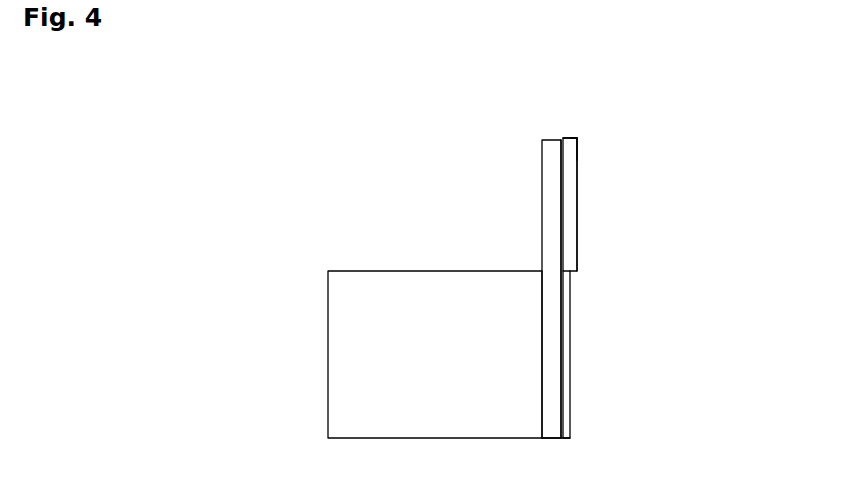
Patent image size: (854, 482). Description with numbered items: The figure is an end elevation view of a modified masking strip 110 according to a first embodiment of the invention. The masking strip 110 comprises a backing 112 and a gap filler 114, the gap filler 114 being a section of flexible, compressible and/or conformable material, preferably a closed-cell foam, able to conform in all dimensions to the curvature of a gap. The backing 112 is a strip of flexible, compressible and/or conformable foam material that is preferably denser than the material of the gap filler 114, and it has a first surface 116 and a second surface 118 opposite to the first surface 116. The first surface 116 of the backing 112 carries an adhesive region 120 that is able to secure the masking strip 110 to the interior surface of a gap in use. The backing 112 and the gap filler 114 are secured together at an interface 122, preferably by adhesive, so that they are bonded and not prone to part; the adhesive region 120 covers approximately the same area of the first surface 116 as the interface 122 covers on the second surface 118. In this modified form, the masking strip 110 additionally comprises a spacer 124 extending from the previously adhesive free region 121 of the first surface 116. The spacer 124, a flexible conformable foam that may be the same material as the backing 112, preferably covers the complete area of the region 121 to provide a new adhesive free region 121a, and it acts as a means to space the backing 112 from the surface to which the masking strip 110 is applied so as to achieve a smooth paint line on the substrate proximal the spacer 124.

The masking strip 110 is at (225, 301).
The backing 112 is at (554, 174).
The gap filler 114 is at (367, 399).
The first surface 116 is at (560, 235).
The second surface 118 is at (553, 234).
The adhesive region 120 is at (563, 328).
The adhesive free region 121 is at (577, 154).
The new adhesive free region 121a is at (577, 154).
The interface 122 is at (545, 397).
The spacer 124 is at (568, 175).